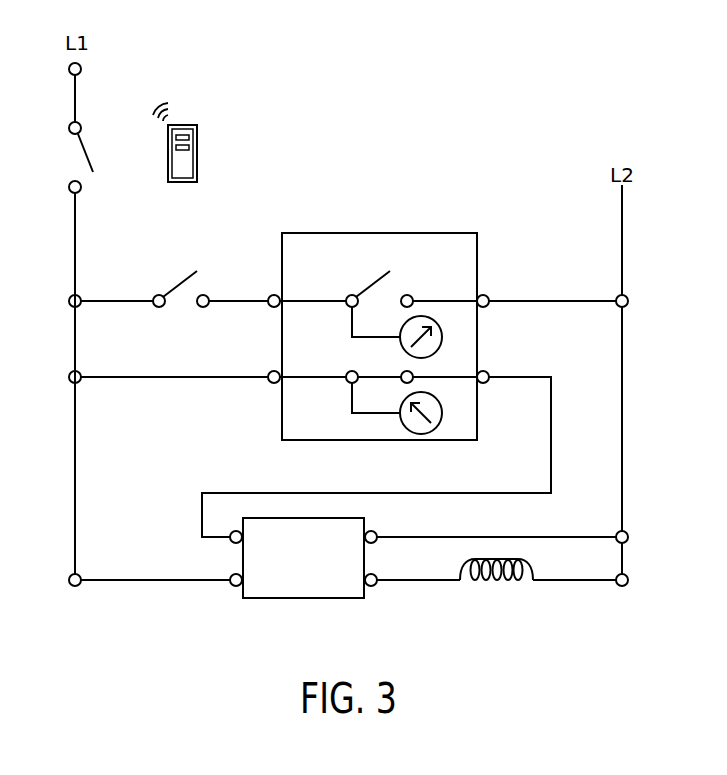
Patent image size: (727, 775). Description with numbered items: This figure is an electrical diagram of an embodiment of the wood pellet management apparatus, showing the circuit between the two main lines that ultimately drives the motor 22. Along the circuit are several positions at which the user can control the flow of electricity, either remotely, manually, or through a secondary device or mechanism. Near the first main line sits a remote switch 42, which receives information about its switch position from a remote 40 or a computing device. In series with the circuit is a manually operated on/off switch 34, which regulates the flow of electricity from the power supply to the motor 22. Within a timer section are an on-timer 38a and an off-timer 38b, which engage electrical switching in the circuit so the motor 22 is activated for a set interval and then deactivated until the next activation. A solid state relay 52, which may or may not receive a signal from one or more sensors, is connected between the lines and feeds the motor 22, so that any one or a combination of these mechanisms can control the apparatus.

The remote switch 42 is at (94, 157).
The remote 40 is at (197, 137).
The manually operated on/off switch 34 is at (181, 284).
The on-timer 38a is at (394, 307).
The off-timer 38b is at (394, 395).
The solid state relay 52 is at (262, 588).
The motor 22 is at (505, 574).